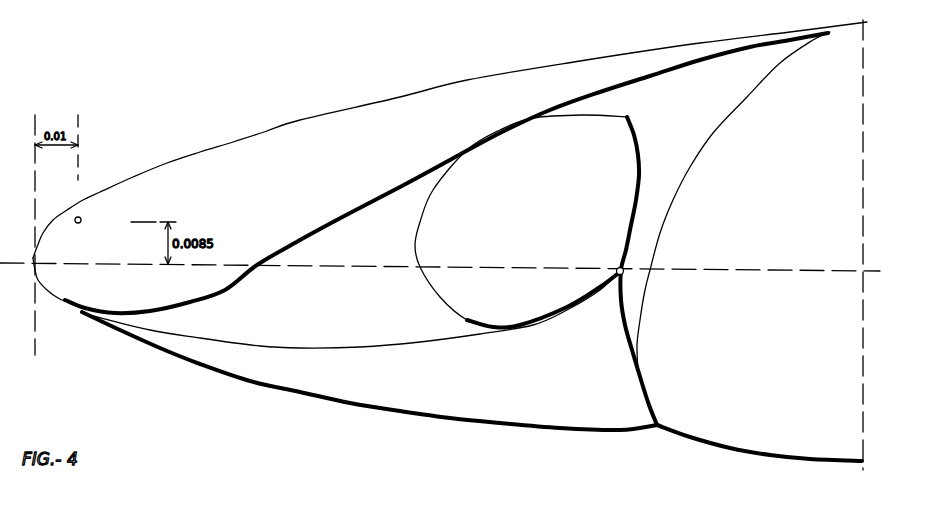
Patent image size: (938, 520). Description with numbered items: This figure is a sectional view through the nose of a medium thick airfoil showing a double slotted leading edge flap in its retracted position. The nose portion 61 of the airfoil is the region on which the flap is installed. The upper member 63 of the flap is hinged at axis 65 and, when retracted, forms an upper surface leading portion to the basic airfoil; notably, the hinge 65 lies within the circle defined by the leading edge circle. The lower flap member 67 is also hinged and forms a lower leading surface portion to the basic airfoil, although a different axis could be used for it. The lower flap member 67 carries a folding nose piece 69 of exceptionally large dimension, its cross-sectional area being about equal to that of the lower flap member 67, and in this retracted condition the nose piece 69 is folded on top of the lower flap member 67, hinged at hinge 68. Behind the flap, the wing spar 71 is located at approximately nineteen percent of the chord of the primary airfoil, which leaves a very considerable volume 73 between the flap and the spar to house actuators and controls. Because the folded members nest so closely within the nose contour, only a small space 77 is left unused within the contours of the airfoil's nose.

The nose portion 61 is at (753, 455).
The upper member 63 is at (303, 119).
The hinge axis 65 is at (79, 217).
The lower flap member 67 is at (390, 412).
The hinge 68 is at (624, 263).
The folding nose piece 69 is at (425, 288).
The wing spar 71 is at (862, 444).
The volume 73 is at (786, 80).
The small space 77 is at (262, 318).